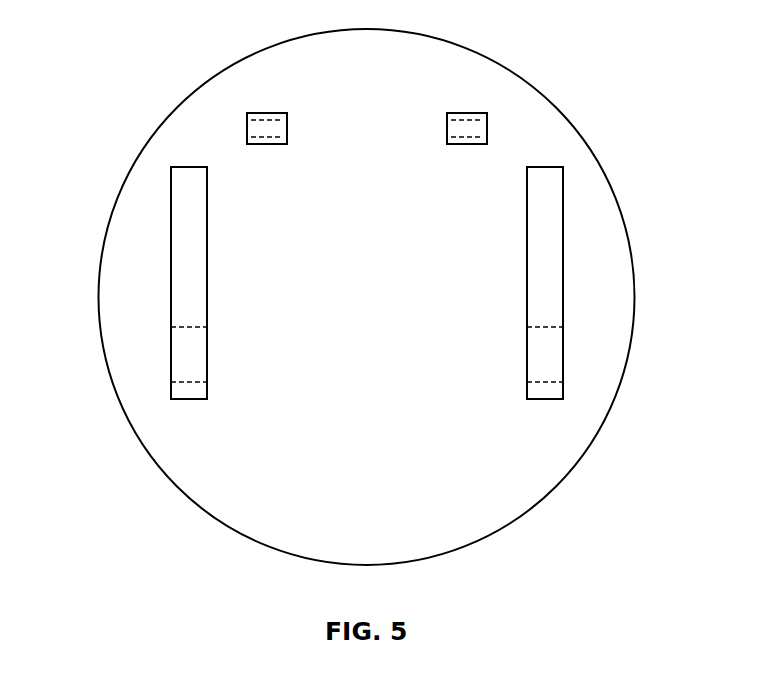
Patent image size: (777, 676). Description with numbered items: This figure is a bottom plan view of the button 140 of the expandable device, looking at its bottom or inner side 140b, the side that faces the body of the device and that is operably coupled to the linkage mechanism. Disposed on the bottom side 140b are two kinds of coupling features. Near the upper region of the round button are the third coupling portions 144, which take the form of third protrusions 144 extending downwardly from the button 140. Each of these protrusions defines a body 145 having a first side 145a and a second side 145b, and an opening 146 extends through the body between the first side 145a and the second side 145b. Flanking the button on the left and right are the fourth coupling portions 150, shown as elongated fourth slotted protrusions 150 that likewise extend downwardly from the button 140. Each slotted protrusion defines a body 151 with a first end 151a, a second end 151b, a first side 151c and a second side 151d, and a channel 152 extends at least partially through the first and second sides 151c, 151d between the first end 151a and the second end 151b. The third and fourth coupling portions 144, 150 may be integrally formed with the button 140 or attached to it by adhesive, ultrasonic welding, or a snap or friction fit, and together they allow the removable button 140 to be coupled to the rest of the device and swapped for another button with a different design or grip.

The button 140 is at (490, 537).
The bottom side 140b is at (388, 487).
The third coupling portions 144 is at (257, 113).
The bodies 145 is at (278, 113).
The first side 145a is at (289, 118).
The second side 145b is at (245, 137).
The opening 146 is at (247, 125).
The fourth coupling portions 150 is at (171, 198).
The body 151 is at (183, 255).
The first end 151a is at (184, 401).
The second end 151b is at (182, 165).
The first side 151c is at (209, 389).
The second side 151d is at (169, 389).
The channel 152 is at (183, 355).